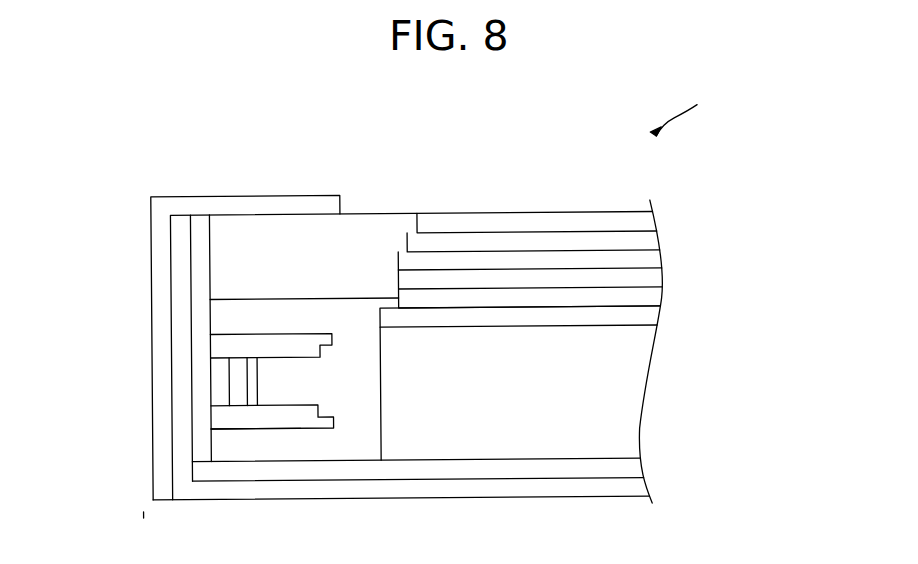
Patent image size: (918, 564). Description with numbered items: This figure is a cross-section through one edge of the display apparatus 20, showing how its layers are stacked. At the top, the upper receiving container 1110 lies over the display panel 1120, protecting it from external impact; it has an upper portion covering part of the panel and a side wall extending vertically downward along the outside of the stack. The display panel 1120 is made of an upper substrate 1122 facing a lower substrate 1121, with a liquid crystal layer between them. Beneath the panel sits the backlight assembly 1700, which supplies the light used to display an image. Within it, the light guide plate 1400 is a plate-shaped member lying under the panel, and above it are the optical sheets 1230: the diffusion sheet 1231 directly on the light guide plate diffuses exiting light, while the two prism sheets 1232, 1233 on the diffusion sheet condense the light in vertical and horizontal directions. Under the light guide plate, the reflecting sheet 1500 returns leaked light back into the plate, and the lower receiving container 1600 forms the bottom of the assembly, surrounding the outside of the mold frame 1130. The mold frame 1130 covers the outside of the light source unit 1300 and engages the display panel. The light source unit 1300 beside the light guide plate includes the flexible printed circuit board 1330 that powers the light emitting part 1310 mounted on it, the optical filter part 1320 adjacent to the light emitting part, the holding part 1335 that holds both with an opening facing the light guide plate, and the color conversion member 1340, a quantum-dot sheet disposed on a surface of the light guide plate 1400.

The display apparatus 20 is at (679, 108).
The upper receiving container 1110 is at (251, 204).
The mold frame 1130 is at (363, 227).
The display panel 1120 is at (596, 227).
The upper substrate 1122 is at (648, 221).
The lower substrate 1121 is at (648, 243).
The intermediate layer stack 1230 is at (592, 281).
The prism sheet 1233 is at (648, 264).
The prism sheet 1232 is at (648, 284).
The diffusion sheet 1231 is at (648, 304).
The light guide plate 1400 is at (632, 375).
The reflecting sheet 1500 is at (632, 470).
The lower receiving container 1600 is at (442, 488).
The backlight assembly 1700 is at (498, 378).
The light source unit 1300 is at (206, 387).
The color conversion member 1340 is at (390, 317).
The light emitting part 1310 is at (220, 364).
The optical filter part 1320 is at (253, 379).
The flexible printed circuit board 1330 is at (202, 414).
The holding part 1335 is at (220, 418).